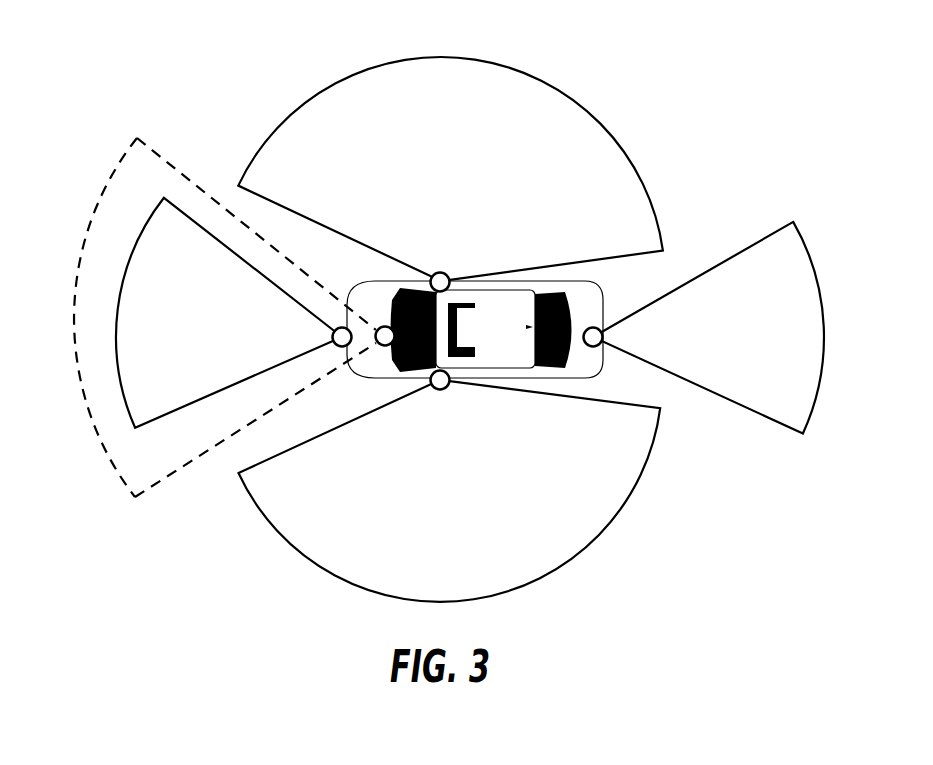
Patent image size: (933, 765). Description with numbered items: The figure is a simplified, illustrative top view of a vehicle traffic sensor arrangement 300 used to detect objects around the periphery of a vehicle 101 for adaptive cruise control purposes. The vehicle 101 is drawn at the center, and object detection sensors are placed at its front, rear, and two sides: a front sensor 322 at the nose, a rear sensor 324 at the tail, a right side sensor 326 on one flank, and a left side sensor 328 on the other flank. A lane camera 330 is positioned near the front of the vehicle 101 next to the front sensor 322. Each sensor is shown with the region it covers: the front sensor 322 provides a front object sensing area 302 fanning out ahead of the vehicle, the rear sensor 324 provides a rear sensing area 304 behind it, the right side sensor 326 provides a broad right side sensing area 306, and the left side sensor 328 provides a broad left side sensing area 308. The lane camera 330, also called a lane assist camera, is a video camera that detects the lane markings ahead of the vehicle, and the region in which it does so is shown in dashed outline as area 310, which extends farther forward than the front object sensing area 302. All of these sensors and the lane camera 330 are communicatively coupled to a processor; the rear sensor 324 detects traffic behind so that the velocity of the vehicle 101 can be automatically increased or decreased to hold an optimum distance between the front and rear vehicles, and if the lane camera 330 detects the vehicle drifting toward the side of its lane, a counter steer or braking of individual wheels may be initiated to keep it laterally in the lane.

The vehicle traffic sensor arrangement 300 is at (872, 130).
The vehicle 101 is at (497, 335).
The front object sensing area 302 is at (223, 336).
The rear sensing area 304 is at (735, 348).
The right side sensing area 306 is at (462, 171).
The left side sensing area 308 is at (452, 511).
The lane marking detection region 310 is at (132, 126).
The front sensor 322 is at (332, 358).
The rear sensor 324 is at (605, 318).
The right side sensor 326 is at (419, 271).
The left side sensor 328 is at (453, 400).
The lane camera 330 is at (373, 355).